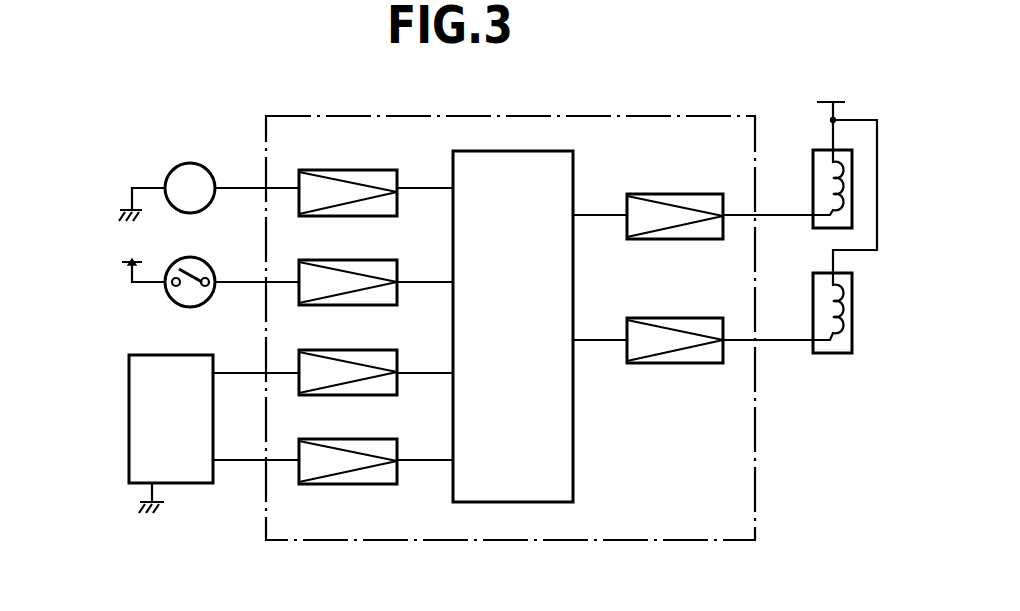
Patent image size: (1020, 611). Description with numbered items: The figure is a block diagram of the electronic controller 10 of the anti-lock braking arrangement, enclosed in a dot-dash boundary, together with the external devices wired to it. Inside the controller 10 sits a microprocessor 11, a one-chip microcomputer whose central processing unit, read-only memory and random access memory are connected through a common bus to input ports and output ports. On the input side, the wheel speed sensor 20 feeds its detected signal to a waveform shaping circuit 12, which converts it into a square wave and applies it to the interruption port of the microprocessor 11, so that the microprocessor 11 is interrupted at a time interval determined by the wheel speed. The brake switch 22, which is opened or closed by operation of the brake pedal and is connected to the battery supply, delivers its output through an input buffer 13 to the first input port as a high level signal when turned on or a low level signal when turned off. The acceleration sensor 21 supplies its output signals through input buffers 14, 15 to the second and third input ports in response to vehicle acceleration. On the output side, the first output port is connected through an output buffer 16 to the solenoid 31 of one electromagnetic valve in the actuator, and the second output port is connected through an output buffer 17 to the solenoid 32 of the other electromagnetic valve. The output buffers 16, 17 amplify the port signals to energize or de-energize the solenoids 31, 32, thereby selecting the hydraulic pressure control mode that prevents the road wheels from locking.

The electronic controller 10 is at (756, 437).
The microprocessor 11 is at (575, 460).
The waveform shaping circuit 12 is at (378, 171).
The input buffer 13 is at (390, 258).
The input buffer 14 is at (390, 350).
The input buffer 15 is at (380, 440).
The output buffer 16 is at (685, 192).
The output buffer 17 is at (695, 317).
The wheel speed sensor 20 is at (203, 169).
The acceleration sensor 21 is at (194, 486).
The brake switch 22 is at (202, 257).
The solenoid 31 is at (813, 166).
The solenoid 32 is at (813, 291).